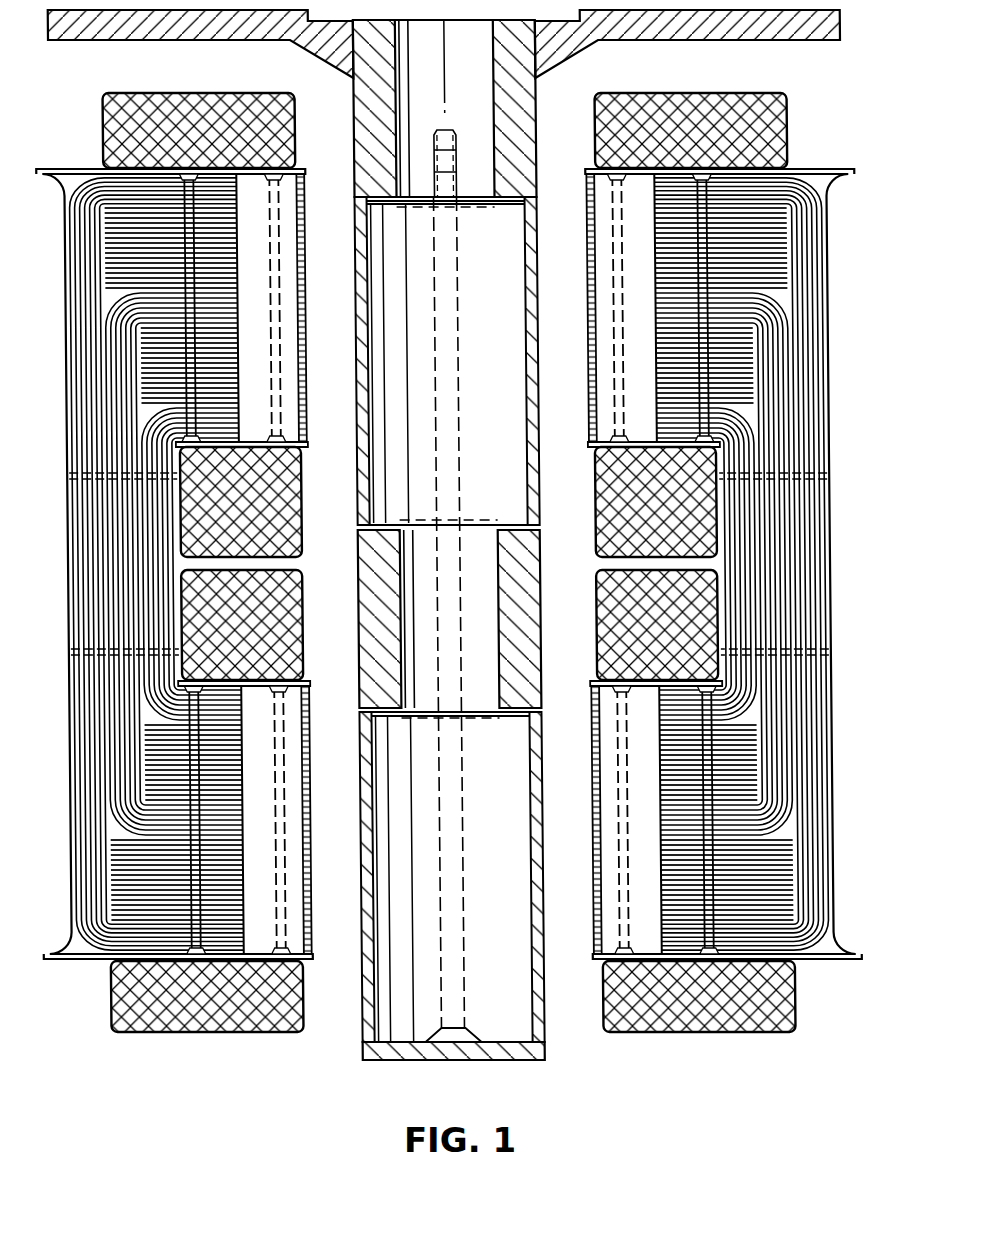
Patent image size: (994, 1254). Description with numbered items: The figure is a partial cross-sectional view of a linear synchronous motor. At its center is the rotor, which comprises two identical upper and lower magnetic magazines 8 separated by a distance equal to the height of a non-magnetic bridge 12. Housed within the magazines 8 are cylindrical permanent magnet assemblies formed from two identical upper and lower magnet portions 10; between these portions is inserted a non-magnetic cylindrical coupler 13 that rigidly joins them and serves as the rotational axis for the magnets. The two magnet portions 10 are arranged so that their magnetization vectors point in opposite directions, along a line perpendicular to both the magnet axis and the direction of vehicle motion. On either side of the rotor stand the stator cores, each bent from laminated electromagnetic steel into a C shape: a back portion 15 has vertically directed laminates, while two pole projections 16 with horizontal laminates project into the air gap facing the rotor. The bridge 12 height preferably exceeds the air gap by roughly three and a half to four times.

The magnetic magazine 8 is at (357, 397).
The magnet portion 10 is at (489, 352).
The non-magnetic bridge 12 is at (540, 587).
The non-magnetic cylindrical coupler 13 is at (406, 652).
The back portion 15 is at (810, 543).
The pole projection 16 is at (588, 247).